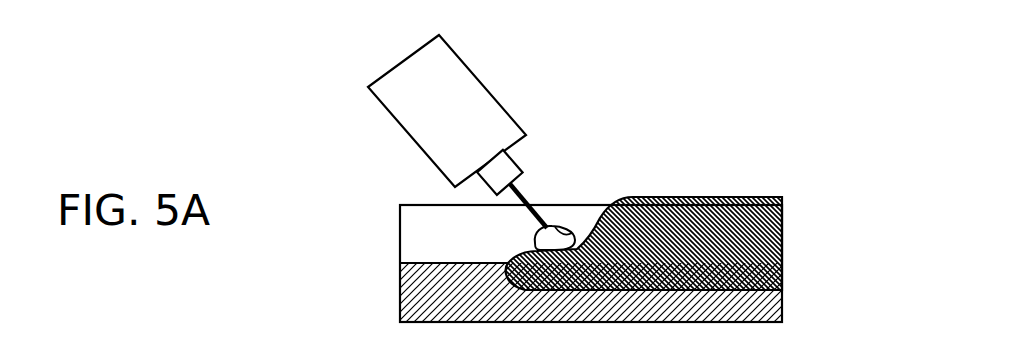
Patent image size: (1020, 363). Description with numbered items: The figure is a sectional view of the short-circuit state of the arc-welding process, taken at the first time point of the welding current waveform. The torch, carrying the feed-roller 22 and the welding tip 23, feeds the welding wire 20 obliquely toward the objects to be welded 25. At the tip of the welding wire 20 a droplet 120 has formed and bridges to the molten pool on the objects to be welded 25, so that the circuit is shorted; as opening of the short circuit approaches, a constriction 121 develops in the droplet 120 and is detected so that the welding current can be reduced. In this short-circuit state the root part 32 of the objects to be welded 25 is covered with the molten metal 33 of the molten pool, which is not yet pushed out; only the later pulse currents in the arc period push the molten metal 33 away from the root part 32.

The welding wire 20 is at (534, 183).
The feed-roller 22 is at (473, 108).
The welding tip 23 is at (517, 155).
The objects to be welded 25 is at (423, 238).
The root part 32 is at (478, 256).
The molten metal 33 is at (636, 201).
The droplet 120 is at (572, 223).
The constriction 121 is at (552, 216).